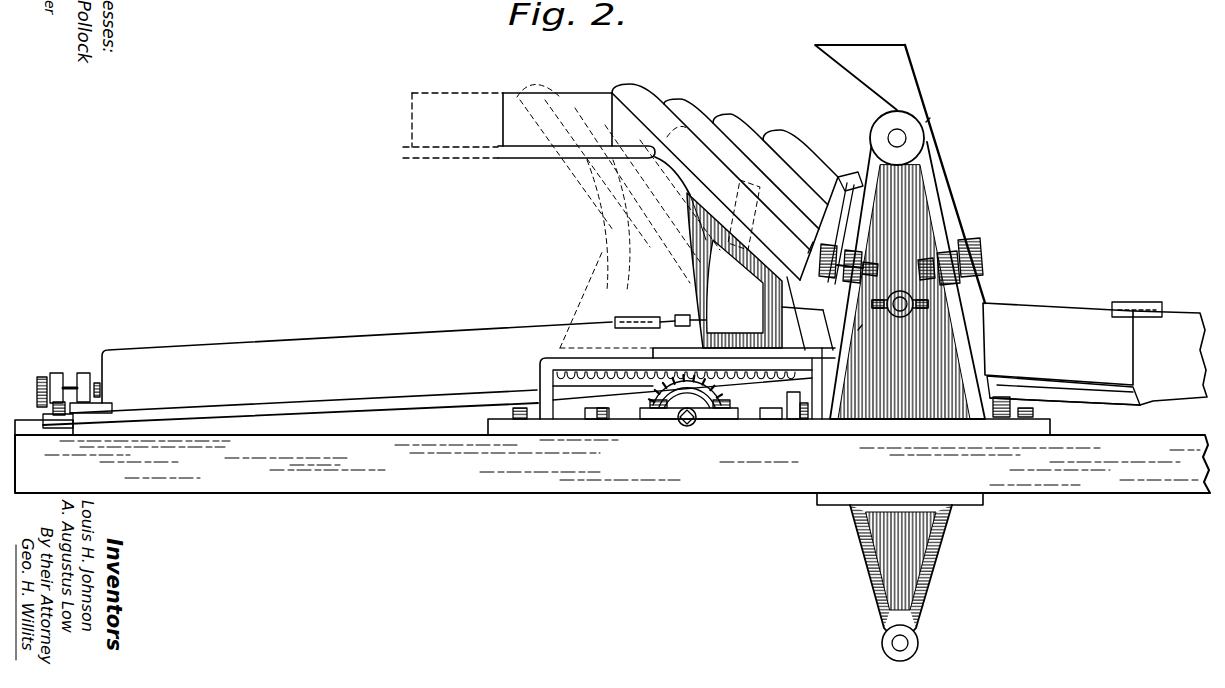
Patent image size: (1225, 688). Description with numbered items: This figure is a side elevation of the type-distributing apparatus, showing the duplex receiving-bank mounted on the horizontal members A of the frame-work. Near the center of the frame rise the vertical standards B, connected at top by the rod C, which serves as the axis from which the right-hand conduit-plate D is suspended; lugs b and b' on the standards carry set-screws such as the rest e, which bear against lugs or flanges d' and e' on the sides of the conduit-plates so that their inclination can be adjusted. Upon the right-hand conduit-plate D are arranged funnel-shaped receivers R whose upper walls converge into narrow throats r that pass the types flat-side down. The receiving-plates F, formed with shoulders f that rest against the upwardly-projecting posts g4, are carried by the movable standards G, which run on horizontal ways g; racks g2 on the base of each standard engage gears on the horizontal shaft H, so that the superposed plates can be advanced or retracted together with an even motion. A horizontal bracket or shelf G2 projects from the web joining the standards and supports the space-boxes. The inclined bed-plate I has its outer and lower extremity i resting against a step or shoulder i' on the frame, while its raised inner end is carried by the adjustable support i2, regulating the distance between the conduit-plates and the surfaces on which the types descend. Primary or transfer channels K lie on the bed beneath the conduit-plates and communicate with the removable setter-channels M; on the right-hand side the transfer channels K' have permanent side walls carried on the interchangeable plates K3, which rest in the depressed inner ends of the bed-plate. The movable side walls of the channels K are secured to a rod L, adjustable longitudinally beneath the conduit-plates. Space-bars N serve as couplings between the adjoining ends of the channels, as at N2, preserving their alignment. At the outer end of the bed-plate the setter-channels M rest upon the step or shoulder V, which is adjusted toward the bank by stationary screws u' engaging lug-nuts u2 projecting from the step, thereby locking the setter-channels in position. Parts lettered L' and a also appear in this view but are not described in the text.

The horizontal members of the frame-work A is at (612, 464).
The vertical standards B is at (907, 280).
The rod C is at (897, 138).
The right-hand conduit-plate D is at (945, 174).
The receiving-plates F is at (725, 182).
The movable standards G is at (710, 215).
The horizontal bracket or shelf G2 is at (529, 136).
The horizontal shaft H is at (683, 426).
The bed-plate I is at (609, 401).
The primary or transfer channels K is at (744, 275).
The type-transfer channels K' is at (818, 235).
The interchangeable plates K3 is at (1074, 393).
The rod L is at (868, 332).
The link L' is at (841, 233).
The setter-channels M is at (638, 362).
The space-bars N is at (660, 313).
The space-bar coupling N2 is at (1137, 301).
The funnel-shaped receivers R is at (860, 77).
The step or shoulder V is at (114, 395).
The nut a is at (923, 268).
The lug b is at (852, 260).
The lug b' is at (948, 262).
The lug or flange d' is at (984, 257).
The set-screw or rest e is at (852, 267).
The lug or flange e' is at (824, 261).
The offsets or shoulders f is at (806, 242).
The horizontal ways g is at (674, 383).
The ribs or racks g2 is at (760, 382).
The upwardly-projecting posts g4 is at (841, 191).
The outer extremity of bed-plate i is at (485, 355).
The step or shoulder i' is at (44, 428).
The adjustable supports i2 is at (786, 404).
The narrow throats r is at (930, 125).
The stationary screws u' is at (57, 371).
The lug-nuts u2 is at (88, 380).